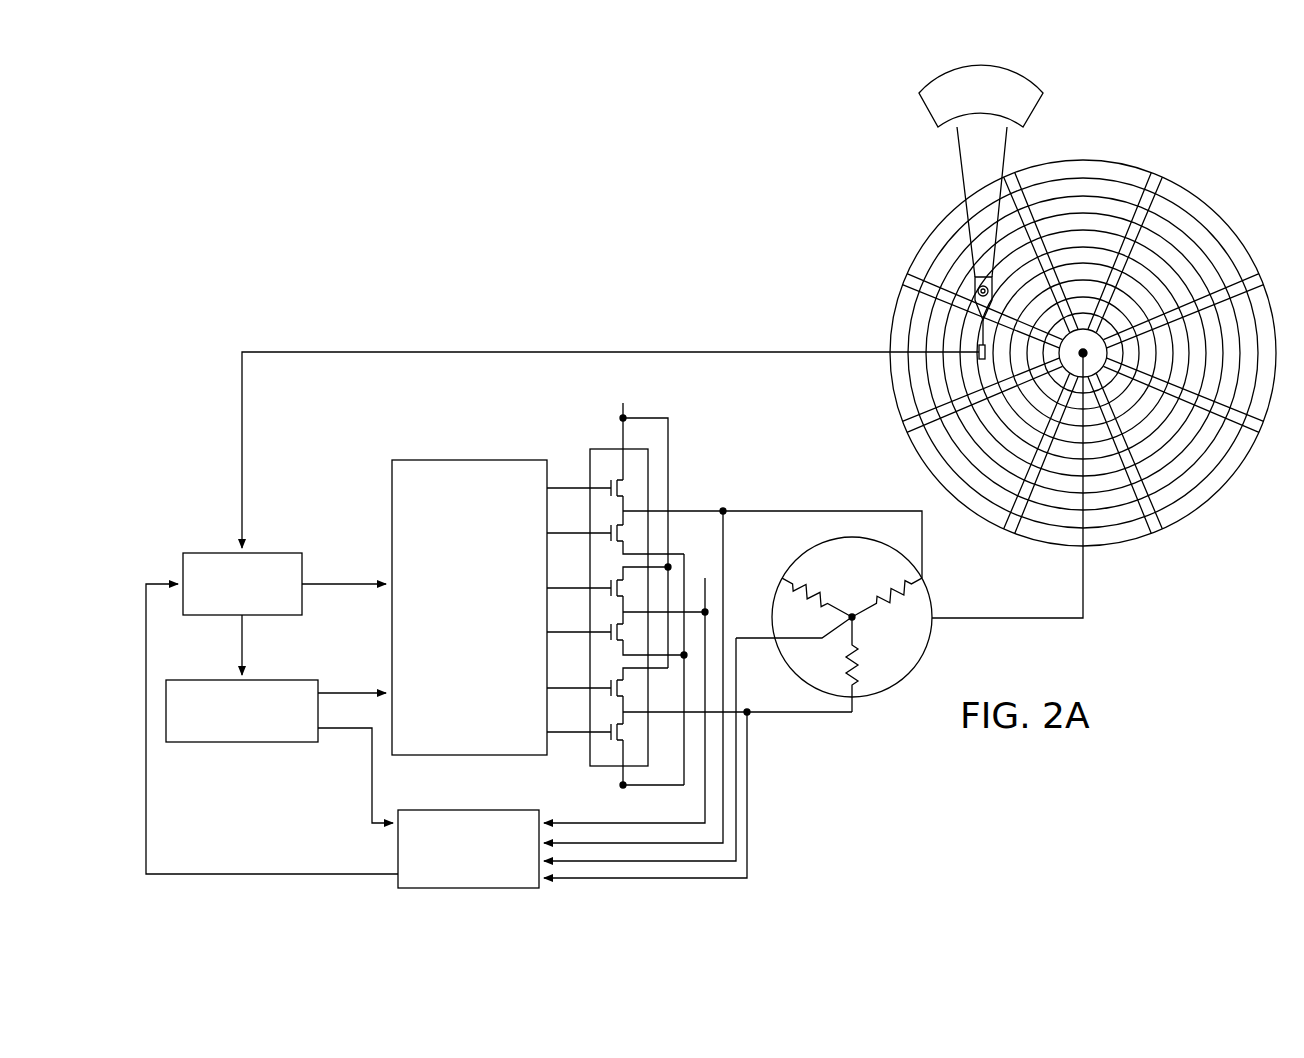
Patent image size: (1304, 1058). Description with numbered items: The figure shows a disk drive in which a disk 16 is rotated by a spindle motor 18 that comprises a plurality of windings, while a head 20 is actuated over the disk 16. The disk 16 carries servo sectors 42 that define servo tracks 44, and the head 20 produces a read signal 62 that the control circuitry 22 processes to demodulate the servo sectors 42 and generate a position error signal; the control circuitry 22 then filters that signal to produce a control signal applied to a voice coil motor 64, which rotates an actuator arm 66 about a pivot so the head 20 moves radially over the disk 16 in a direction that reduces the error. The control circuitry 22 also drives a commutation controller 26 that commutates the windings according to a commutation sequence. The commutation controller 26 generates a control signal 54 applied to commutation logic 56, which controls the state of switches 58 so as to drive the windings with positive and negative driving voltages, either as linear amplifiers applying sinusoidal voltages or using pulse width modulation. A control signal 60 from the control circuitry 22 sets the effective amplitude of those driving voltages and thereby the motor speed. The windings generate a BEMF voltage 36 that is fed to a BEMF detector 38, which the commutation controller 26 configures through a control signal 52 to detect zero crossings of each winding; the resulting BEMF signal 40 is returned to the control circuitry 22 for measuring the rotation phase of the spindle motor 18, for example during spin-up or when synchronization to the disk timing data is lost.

The disk 16 is at (1215, 204).
The spindle motor 18 is at (930, 641).
The head 20 is at (992, 352).
The control circuitry 22 is at (282, 615).
The commutation controller 26 is at (243, 742).
The back electromotive force (BEMF) voltage 36 is at (582, 876).
The BEMF detector 38 is at (468, 810).
The BEMF signal 40 is at (275, 874).
The servo sectors 42 is at (1079, 357).
The servo tracks 44 is at (1081, 185).
The control signal 52 is at (373, 775).
The control signal 54 is at (348, 692).
The commutation logic 56 is at (468, 460).
The switches 58 is at (600, 449).
The control signal 60 is at (340, 583).
The read signal 62 is at (718, 352).
The voice coil motor (VCM) 64 is at (938, 127).
The actuator arm 66 is at (966, 187).